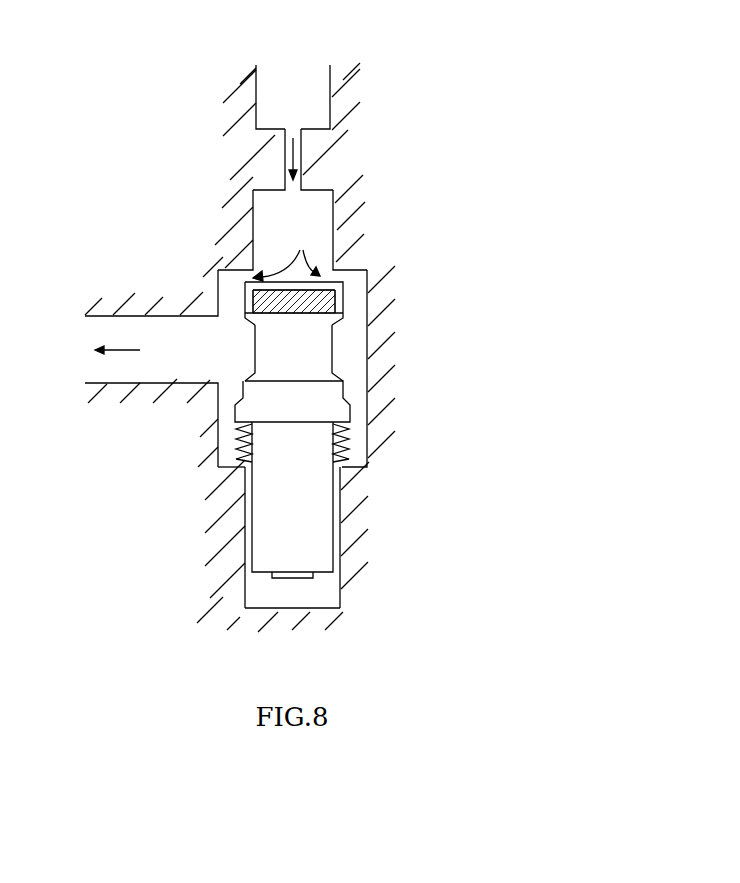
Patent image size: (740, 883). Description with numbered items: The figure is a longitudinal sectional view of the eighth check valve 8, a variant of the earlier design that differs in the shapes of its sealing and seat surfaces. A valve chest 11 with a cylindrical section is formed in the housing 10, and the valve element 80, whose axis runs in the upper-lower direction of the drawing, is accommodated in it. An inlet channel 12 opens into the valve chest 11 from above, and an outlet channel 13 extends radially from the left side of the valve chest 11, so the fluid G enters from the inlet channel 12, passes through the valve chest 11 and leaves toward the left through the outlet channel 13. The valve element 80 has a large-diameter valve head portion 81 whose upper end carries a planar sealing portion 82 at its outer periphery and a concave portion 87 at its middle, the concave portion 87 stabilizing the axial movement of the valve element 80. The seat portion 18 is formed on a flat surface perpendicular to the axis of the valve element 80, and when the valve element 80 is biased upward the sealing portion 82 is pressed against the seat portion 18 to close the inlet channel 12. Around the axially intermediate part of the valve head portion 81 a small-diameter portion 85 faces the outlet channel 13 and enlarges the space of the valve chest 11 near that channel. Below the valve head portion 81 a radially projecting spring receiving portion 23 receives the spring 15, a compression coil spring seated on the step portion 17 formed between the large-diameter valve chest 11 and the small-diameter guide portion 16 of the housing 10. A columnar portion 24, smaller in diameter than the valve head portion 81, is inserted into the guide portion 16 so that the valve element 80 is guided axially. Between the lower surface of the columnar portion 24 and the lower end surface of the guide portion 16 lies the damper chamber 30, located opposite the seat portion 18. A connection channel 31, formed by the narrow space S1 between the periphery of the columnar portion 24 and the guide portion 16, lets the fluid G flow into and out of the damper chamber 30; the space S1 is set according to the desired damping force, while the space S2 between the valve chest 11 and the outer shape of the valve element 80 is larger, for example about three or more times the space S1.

The eighth check valve 8 is at (482, 216).
The housing 10 is at (399, 408).
The valve chest 11 is at (347, 337).
The inlet channel 12 is at (310, 220).
The outlet channel 13 is at (168, 332).
The spring 15 is at (348, 452).
The guide portion 16 is at (255, 603).
The step portion 17 is at (222, 460).
The seat portion 18 is at (328, 270).
The spring receiving portion 23 is at (350, 433).
The columnar portion 24 is at (302, 515).
The damper chamber 30 is at (310, 588).
The connection channel 31 is at (340, 557).
The valve element 80 is at (272, 470).
The valve head portion 81 is at (333, 310).
The sealing portion 82 is at (345, 280).
The small-diameter portion 85 is at (300, 358).
The concave portion 87 is at (293, 283).
The fluid G is at (122, 352).
The space of the connection channel S1 is at (315, 496).
The space between valve chest and valve element S2 is at (265, 387).